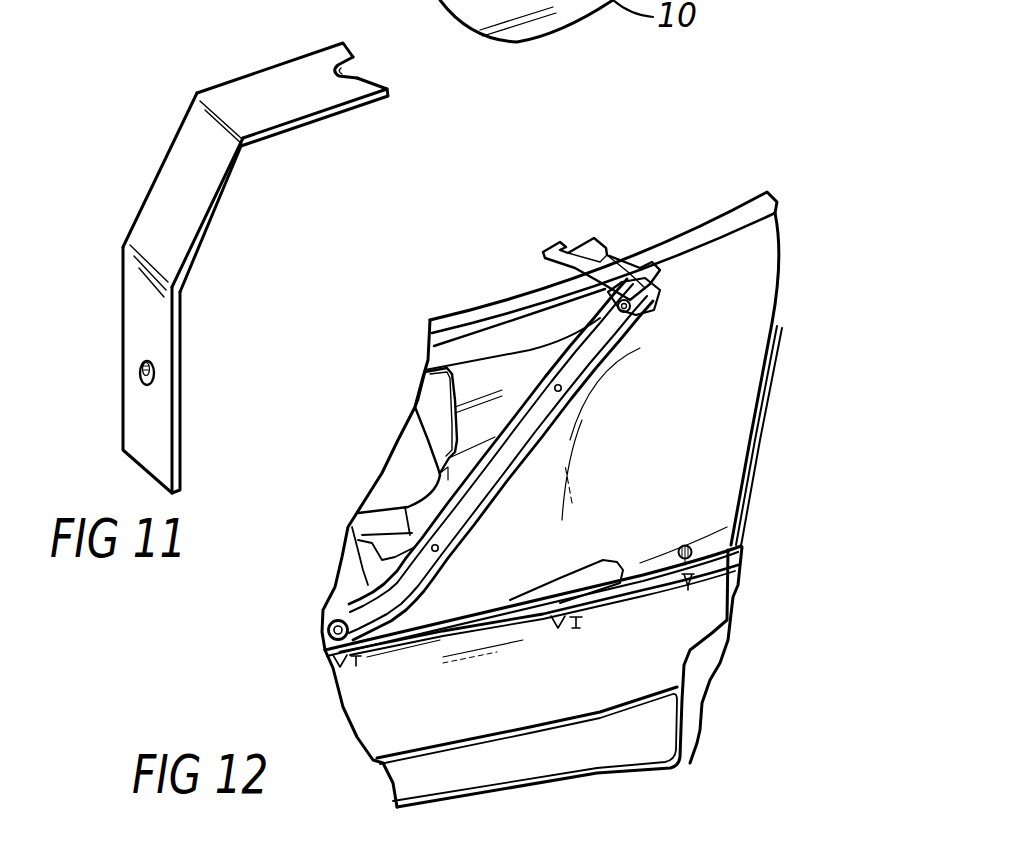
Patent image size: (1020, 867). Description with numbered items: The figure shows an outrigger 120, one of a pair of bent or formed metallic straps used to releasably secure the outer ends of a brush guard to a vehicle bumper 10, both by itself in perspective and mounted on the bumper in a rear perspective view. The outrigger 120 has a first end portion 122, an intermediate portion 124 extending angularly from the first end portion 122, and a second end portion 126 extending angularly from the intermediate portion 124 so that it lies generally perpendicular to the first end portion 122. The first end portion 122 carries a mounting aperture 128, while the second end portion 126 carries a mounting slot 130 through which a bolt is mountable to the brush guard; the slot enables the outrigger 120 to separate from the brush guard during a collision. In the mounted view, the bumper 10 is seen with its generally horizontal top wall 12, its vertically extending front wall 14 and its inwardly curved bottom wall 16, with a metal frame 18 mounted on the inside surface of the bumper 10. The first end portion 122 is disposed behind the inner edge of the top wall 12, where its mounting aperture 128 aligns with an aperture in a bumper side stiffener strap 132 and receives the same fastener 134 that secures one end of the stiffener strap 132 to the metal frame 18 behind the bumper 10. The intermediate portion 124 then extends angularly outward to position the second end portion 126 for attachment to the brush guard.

In FIG. 12, the bumper 10 is at (750, 333).
In FIG. 12, the top wall 12 is at (530, 293).
In FIG. 12, the front wall 14 is at (735, 408).
In FIG. 12, the bottom wall 16 is at (675, 630).
In FIG. 12, the metal frame 18 is at (497, 340).
In FIG. 11, the outrigger 120 is at (157, 62).
In FIG. 12, the outrigger 120 is at (610, 248).
In FIG. 11, the first end portion 122 is at (137, 283).
In FIG. 11, the intermediate portion 124 is at (190, 146).
In FIG. 11, the second end portion 126 is at (258, 88).
In FIG. 11, the mounting aperture 128 is at (143, 377).
In FIG. 11, the mounting slot 130 is at (373, 68).
In FIG. 12, the bumper side stiffener strap 132 is at (472, 495).
In FIG. 12, the fastener 134 is at (652, 291).